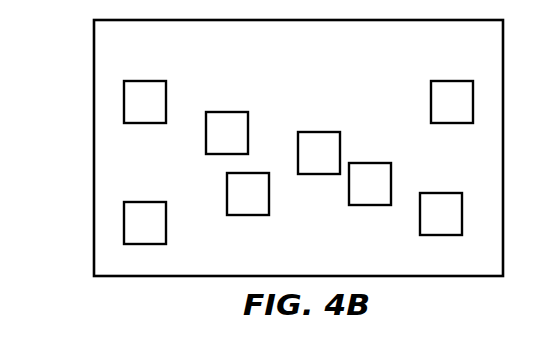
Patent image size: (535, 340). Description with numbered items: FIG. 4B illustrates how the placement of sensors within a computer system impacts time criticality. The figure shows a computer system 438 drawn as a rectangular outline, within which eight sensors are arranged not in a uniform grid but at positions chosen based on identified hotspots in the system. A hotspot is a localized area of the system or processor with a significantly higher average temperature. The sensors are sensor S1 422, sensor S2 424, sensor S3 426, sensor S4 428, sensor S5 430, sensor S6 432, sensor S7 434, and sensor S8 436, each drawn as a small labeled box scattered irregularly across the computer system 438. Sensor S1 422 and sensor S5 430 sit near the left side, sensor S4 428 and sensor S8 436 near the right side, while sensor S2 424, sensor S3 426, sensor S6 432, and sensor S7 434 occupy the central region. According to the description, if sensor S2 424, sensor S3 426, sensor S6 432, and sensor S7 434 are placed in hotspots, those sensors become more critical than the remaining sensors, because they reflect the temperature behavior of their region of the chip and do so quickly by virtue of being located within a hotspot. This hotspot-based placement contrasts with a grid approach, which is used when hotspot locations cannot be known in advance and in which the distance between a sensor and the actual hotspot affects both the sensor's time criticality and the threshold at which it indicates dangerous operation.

The sensor S1 422 is at (139, 81).
The sensor S2 424 is at (223, 112).
The sensor S3 426 is at (325, 132).
The sensor S4 428 is at (457, 81).
The sensor S5 430 is at (138, 202).
The sensor S6 432 is at (242, 215).
The sensor S7 434 is at (373, 205).
The sensor S8 436 is at (447, 193).
The computer system 438 is at (94, 181).